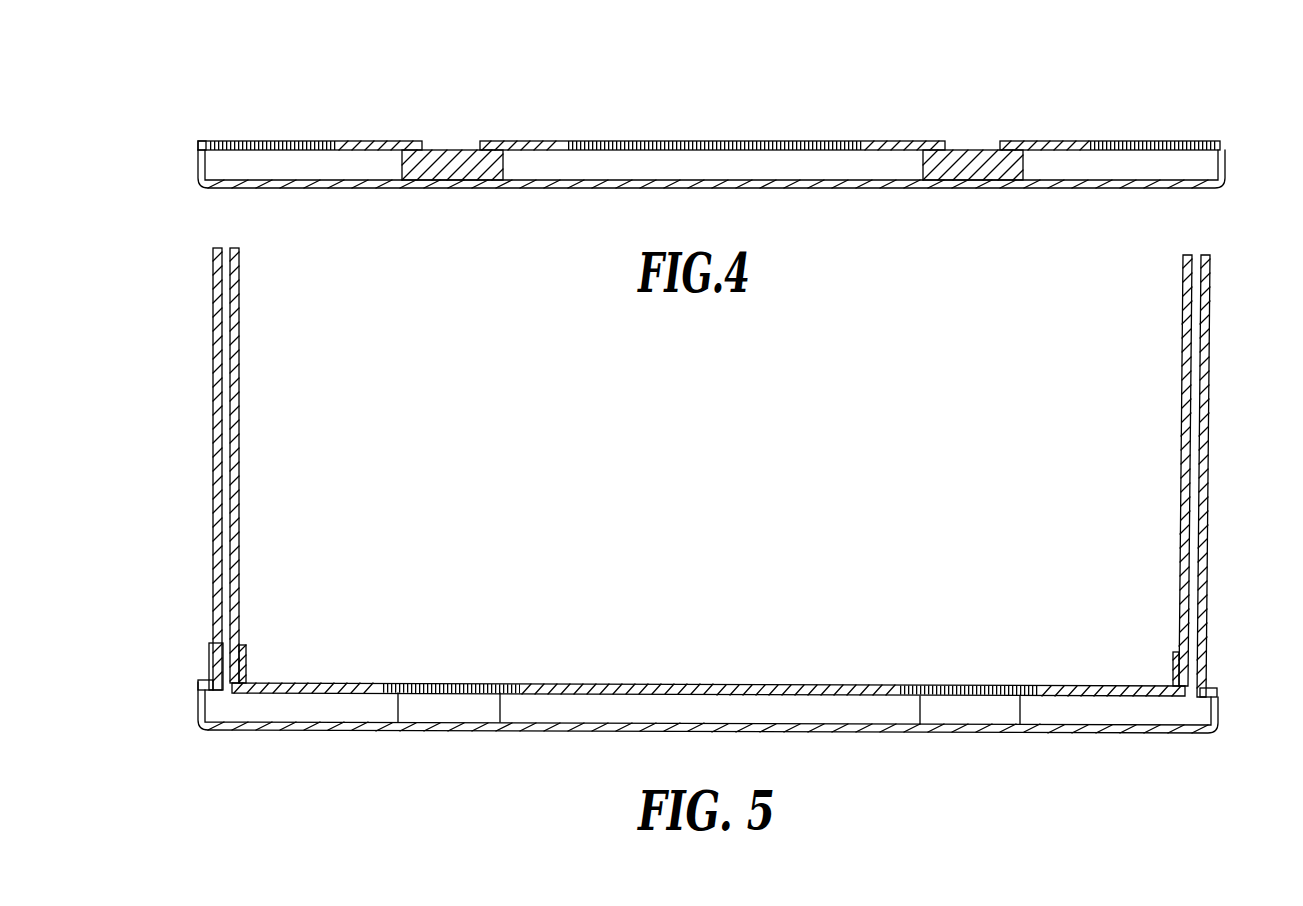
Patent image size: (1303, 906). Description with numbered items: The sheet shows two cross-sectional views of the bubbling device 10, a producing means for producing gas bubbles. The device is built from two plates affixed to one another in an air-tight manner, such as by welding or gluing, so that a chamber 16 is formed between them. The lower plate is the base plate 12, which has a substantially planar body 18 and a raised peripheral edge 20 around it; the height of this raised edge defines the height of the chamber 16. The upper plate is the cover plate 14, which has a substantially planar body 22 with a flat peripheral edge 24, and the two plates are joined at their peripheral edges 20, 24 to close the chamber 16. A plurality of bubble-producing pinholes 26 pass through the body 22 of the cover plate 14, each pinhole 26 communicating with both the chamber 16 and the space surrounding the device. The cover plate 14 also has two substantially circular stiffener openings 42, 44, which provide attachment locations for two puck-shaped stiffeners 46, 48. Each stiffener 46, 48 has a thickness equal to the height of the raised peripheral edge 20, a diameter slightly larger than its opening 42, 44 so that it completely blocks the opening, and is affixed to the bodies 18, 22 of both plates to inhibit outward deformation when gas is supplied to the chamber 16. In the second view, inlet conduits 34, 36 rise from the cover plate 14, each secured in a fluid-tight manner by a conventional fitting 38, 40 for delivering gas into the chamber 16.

In FIG. 4, the bubbling device 10 is at (680, 131).
In FIG. 5, the bubbling device 10 is at (715, 536).
In FIG. 4, the base plate 12 is at (680, 166).
In FIG. 5, the base plate 12 is at (715, 712).
In FIG. 4, the cover plate 14 is at (709, 101).
In FIG. 5, the cover plate 14 is at (708, 640).
In FIG. 4, the chamber 16 is at (360, 167).
In FIG. 5, the chamber 16 is at (818, 720).
In FIG. 4, the substantially planar body 18 is at (300, 186).
In FIG. 5, the substantially planar body 18 is at (560, 724).
In FIG. 4, the raised peripheral edge 20 is at (202, 162).
In FIG. 5, the raised peripheral edge 20 is at (200, 697).
In FIG. 4, the substantially planar body 22 is at (388, 141).
In FIG. 5, the substantially planar body 22 is at (635, 683).
In FIG. 4, the flat peripheral edge 24 is at (200, 142).
In FIG. 5, the flat peripheral edge 24 is at (207, 680).
In FIG. 4, the pinholes 26 is at (255, 140).
In FIG. 5, the pinholes 26 is at (400, 683).
In FIG. 5, the inlet conduit 34 is at (240, 332).
In FIG. 5, the inlet conduit 36 is at (1210, 318).
In FIG. 5, the fitting 38 is at (246, 672).
In FIG. 5, the fitting 40 is at (1210, 680).
In FIG. 4, the stiffener opening 42 is at (458, 133).
In FIG. 4, the stiffener opening 44 is at (987, 132).
In FIG. 4, the stiffener 46 is at (455, 165).
In FIG. 5, the stiffener 46 is at (425, 712).
In FIG. 4, the stiffener 48 is at (980, 160).
In FIG. 5, the stiffener 48 is at (955, 715).